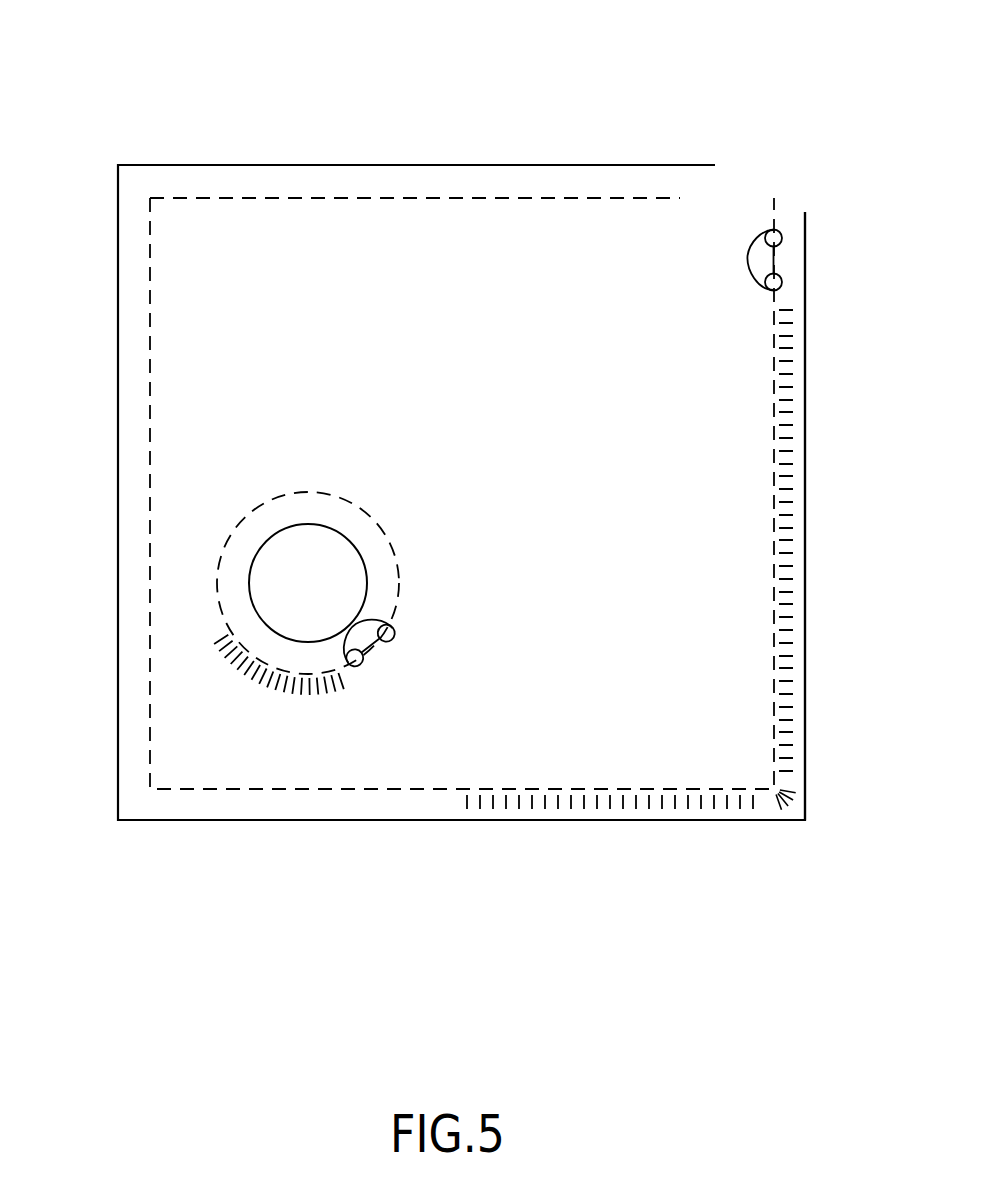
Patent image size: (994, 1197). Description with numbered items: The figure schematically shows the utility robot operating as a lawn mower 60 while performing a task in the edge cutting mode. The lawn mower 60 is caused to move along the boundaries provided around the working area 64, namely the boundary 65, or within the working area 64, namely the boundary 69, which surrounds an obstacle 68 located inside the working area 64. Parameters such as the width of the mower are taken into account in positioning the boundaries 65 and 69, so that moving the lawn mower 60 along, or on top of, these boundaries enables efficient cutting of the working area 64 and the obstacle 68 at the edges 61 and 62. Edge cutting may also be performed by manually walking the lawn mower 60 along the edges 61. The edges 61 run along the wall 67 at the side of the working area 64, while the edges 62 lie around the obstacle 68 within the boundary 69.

The lawn mower 60 is at (772, 214).
The edges 61 is at (782, 522).
The edges 62 is at (307, 693).
The working area 64 is at (606, 623).
The boundary 65 is at (773, 360).
The wall 67 is at (805, 447).
The obstacle 68 is at (280, 580).
The boundary 69 is at (243, 522).